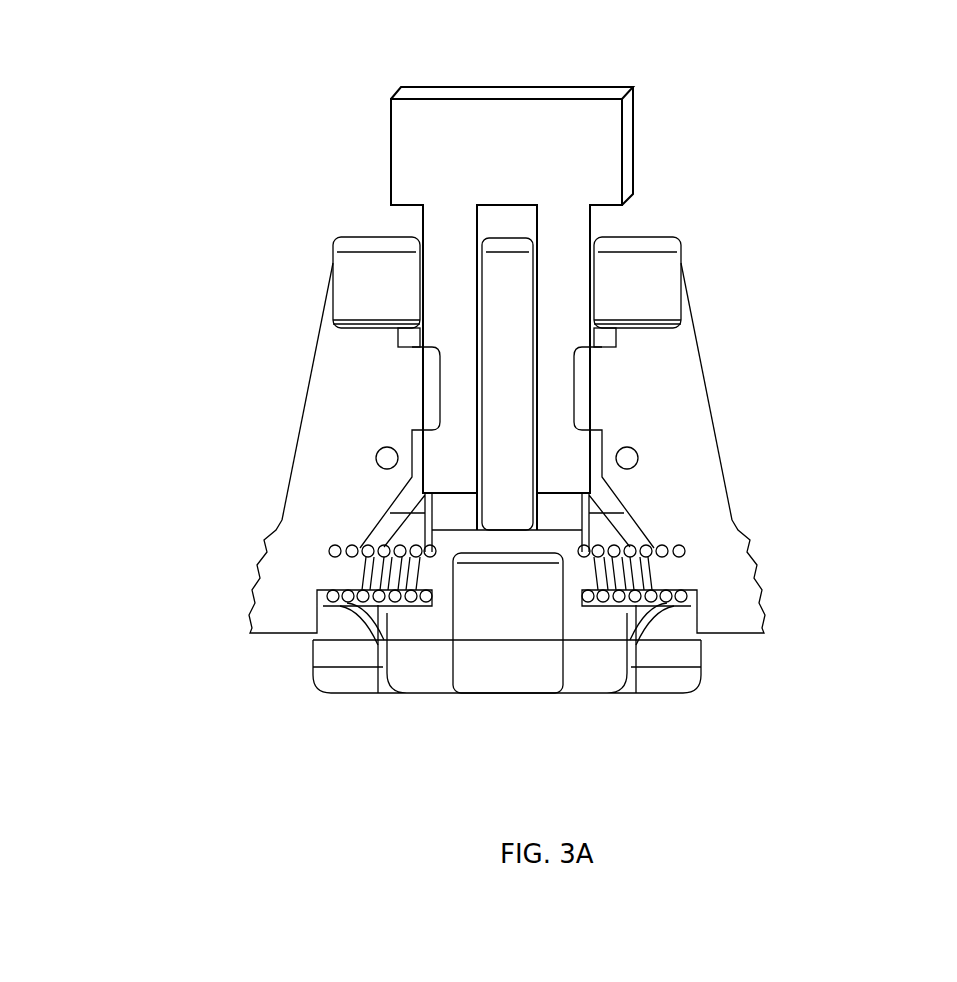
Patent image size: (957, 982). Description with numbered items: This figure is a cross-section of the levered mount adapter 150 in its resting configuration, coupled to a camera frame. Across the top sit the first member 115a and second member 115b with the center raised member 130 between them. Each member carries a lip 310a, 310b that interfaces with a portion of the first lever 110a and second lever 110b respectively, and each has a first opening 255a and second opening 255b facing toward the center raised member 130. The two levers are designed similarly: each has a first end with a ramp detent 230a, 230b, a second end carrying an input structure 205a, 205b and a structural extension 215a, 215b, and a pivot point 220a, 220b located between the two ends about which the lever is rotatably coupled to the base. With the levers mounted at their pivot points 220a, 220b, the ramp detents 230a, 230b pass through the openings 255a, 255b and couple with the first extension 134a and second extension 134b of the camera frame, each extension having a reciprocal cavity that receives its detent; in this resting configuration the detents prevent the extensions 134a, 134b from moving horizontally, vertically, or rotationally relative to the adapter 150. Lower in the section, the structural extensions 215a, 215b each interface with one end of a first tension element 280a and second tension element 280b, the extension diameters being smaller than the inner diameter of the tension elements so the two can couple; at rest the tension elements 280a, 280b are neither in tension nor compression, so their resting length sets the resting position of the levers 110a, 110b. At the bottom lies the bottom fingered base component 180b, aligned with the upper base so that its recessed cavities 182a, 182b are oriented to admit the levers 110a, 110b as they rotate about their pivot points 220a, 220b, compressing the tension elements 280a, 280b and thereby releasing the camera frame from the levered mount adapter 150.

The levered mount adapter 150 is at (171, 86).
The first extension of the camera frame 134a is at (449, 274).
The second extension of the camera frame 134b is at (560, 270).
The center raised member 130 is at (507, 384).
The first member 115a is at (371, 268).
The second member 115b is at (643, 268).
The first opening 255a is at (409, 347).
The second opening 255b is at (604, 346).
The lip 310a is at (401, 326).
The lip 310b is at (611, 326).
The ramp detent 230a is at (428, 388).
The ramp detent 230b is at (600, 388).
The pivot point 220a is at (364, 468).
The pivot point 220b is at (652, 457).
The first lever 110a is at (328, 391).
The second lever 110b is at (686, 391).
The input structure 205a is at (250, 580).
The input structure 205b is at (767, 588).
The first tension element 280a is at (372, 584).
The second tension element 280b is at (646, 597).
The structural extension 215a is at (348, 571).
The structural extension 215b is at (664, 570).
The recessed cavity 182a is at (332, 628).
The recessed cavity 182b is at (681, 626).
The bottom fingered base component 180b is at (512, 659).